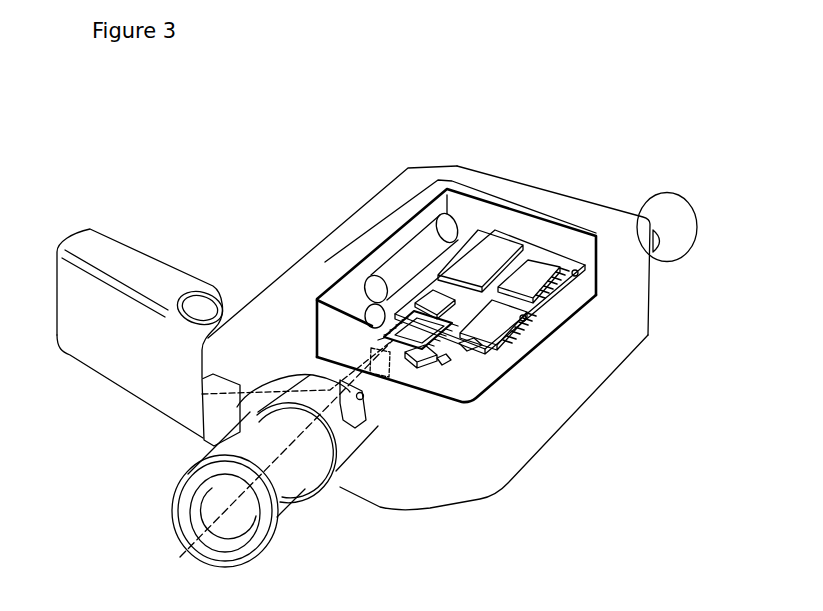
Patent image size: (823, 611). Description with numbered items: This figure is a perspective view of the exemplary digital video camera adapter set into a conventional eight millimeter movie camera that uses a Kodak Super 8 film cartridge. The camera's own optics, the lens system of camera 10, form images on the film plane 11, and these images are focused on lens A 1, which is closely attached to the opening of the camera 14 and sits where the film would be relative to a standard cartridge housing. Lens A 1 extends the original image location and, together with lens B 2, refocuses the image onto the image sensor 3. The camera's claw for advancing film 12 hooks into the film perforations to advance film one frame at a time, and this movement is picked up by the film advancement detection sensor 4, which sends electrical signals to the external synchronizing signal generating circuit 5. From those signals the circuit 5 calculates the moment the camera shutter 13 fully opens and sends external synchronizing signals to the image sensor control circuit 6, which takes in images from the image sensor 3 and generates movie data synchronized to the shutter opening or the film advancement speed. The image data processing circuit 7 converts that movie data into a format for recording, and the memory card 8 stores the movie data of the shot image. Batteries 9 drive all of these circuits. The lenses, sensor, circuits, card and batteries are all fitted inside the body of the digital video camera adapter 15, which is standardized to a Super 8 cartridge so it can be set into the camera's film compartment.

The lens A 1 is at (372, 352).
The lens B 2 is at (368, 306).
The image sensor 3 is at (400, 302).
The film advancement detection sensor 4 is at (440, 362).
The external synchronizing signal generating circuit 5 is at (352, 262).
The image sensor control circuit 6 is at (545, 300).
The image data processing circuit 7 is at (538, 248).
The memory card 8 is at (453, 262).
The batteries 9 is at (421, 242).
The lens system of camera 10 is at (262, 581).
The film plane 11 is at (202, 394).
The claw for advancing film 12 is at (440, 390).
The shutter 13 is at (366, 412).
The opening of the camera 14 is at (440, 418).
The body of the digital video camera adapter 15 is at (492, 190).